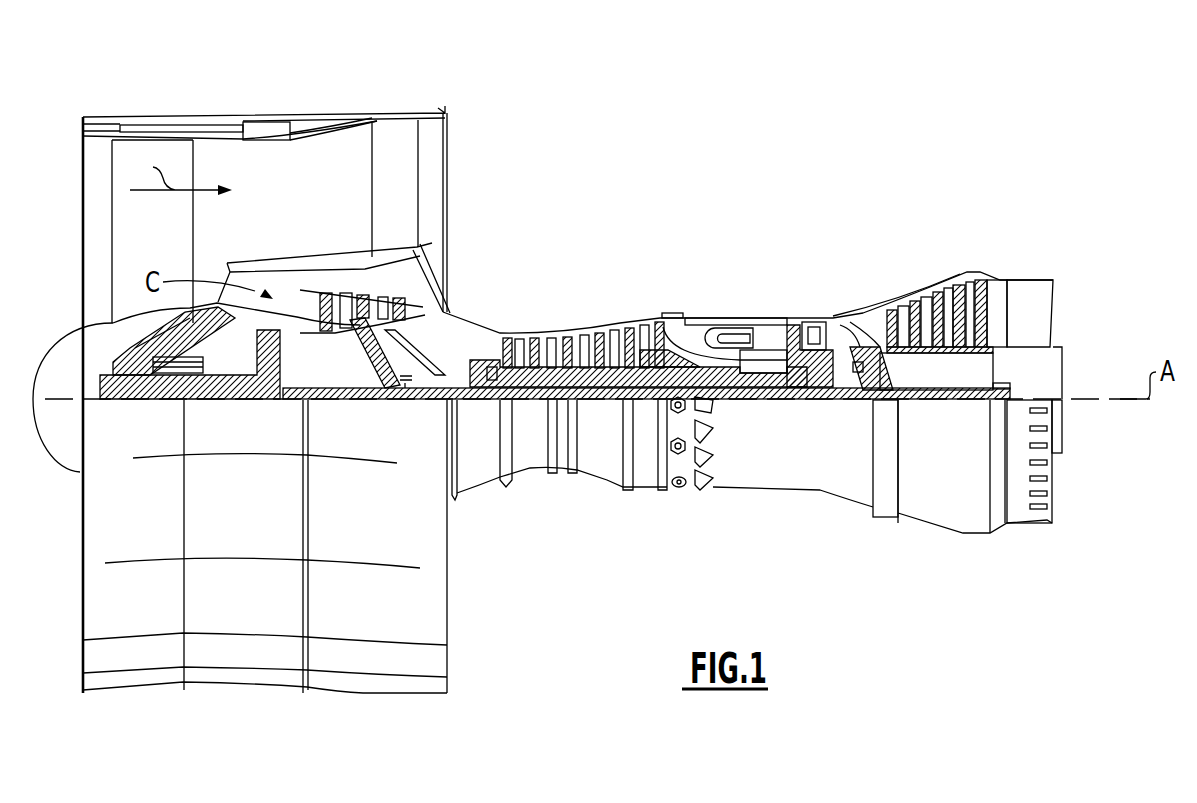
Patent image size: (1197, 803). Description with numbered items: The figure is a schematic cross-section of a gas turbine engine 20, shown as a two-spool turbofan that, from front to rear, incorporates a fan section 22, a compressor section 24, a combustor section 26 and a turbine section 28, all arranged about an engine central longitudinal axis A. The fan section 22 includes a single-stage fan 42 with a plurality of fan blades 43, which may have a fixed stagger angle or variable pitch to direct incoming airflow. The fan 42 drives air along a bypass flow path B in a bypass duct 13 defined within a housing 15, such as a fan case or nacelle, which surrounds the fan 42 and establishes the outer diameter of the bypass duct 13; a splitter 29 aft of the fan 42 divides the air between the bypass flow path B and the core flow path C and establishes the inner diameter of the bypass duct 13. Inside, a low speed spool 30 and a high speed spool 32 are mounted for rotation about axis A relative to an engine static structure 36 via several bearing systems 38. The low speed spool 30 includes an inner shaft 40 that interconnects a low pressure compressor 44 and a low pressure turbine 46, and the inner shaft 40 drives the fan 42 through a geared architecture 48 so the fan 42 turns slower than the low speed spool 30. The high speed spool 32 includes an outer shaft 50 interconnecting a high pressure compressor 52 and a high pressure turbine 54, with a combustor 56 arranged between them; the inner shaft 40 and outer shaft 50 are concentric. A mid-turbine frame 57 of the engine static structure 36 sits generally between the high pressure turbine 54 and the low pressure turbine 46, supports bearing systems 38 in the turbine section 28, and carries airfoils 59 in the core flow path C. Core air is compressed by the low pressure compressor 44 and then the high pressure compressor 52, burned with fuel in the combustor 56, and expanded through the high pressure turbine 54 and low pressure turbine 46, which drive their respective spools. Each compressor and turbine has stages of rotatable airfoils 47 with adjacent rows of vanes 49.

The bypass duct 13 is at (318, 145).
The housing 15 is at (268, 122).
The gas turbine engine 20 is at (722, 168).
The fan section 22 is at (194, 100).
The compressor section 24 is at (499, 297).
The combustor section 26 is at (719, 285).
The turbine section 28 is at (900, 248).
The splitter 29 is at (228, 263).
The low speed spool 30 is at (603, 412).
The high speed spool 32 is at (645, 330).
The engine static structure 36 is at (643, 495).
The bearing systems 38 is at (407, 385).
The inner shaft 40 is at (467, 400).
The fan 42 is at (170, 241).
The fan blades 43 is at (180, 245).
The low pressure compressor 44 is at (373, 307).
The low pressure turbine 46 is at (937, 293).
The rotatable airfoils 47 is at (327, 297).
The geared architecture 48 is at (272, 383).
The vanes 49 is at (348, 297).
The outer shaft 50 is at (727, 387).
The high pressure compressor 52 is at (583, 333).
The high pressure turbine 54 is at (795, 330).
The combustor 56 is at (720, 340).
The mid-turbine frame 57 is at (858, 300).
The airfoils 59 is at (866, 347).